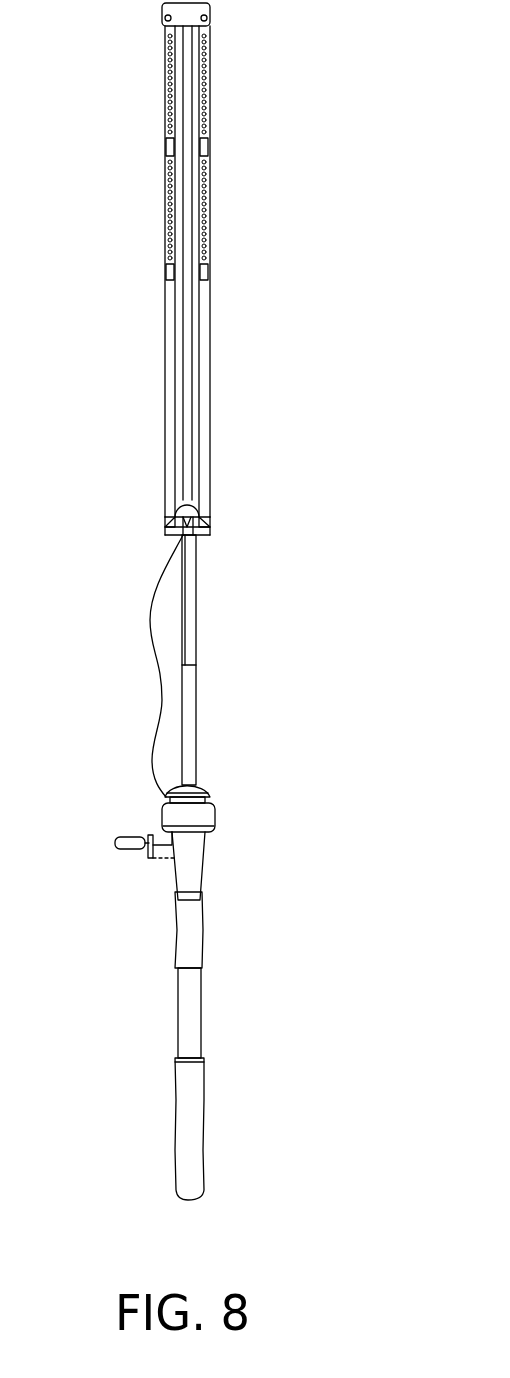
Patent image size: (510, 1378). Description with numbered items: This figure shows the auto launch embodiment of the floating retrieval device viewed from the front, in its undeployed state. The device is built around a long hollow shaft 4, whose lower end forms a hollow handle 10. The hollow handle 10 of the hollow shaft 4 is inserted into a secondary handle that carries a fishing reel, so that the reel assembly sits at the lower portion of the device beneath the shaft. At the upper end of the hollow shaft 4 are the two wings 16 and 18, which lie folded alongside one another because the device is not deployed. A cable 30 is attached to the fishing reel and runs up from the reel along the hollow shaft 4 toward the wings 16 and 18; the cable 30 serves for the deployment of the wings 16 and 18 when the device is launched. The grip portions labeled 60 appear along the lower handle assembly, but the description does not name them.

The hollow shaft 4 is at (196, 618).
The hollow handle 10 is at (203, 931).
The wing 16 is at (165, 352).
The wing 18 is at (210, 392).
The cable 30 is at (153, 727).
The grip 60 is at (215, 815).